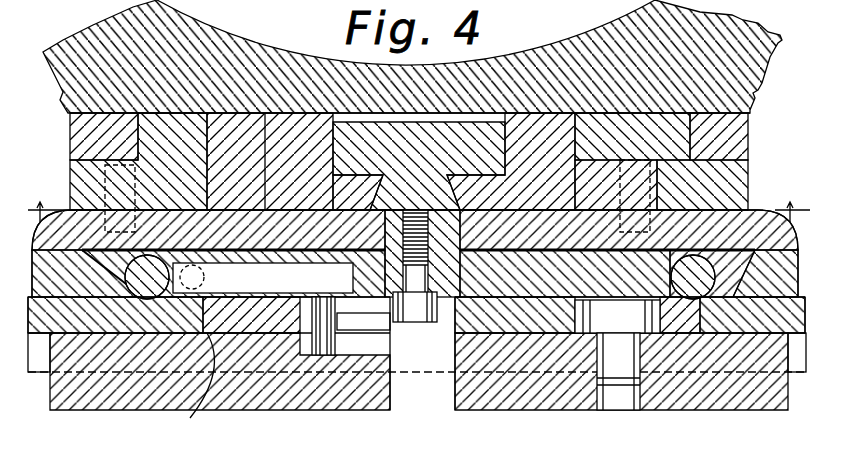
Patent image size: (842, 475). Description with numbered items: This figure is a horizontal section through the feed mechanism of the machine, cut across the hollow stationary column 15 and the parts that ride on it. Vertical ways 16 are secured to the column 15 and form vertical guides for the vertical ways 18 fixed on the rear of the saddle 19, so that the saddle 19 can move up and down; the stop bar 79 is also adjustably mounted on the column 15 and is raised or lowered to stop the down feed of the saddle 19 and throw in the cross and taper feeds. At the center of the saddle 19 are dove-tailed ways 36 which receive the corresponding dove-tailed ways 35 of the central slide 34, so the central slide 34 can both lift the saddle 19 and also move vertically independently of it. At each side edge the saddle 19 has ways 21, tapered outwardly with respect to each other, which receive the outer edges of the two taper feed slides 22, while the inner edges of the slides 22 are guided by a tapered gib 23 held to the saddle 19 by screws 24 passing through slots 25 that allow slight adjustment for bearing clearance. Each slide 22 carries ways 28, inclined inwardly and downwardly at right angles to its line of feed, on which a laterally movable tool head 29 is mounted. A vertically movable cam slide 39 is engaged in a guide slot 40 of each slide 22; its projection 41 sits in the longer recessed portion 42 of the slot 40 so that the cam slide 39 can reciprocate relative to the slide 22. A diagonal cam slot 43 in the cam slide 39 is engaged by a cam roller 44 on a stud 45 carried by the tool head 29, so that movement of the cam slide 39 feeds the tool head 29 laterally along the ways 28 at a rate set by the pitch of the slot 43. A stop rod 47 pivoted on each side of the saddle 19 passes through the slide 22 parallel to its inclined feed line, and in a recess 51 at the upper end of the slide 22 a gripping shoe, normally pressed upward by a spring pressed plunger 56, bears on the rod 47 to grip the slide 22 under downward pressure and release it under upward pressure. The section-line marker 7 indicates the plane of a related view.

The hollow stationary column 15 is at (243, 50).
The vertical ways 16 is at (87, 133).
The vertical ways 18 is at (88, 178).
The stop bar 79 is at (350, 180).
The dove-tailed ways 36 is at (357, 178).
The central slide 34 is at (386, 170).
The dove-tailed ways 35 is at (447, 170).
The saddle 19 is at (200, 247).
The ways 21 is at (415, 273).
The stop rod 47 is at (140, 298).
The spring pressed plunger 56 is at (205, 277).
The recess 51 is at (263, 278).
The taper feed slides 22 is at (416, 315).
The cam slides 39 is at (250, 320).
The tool heads 29 is at (127, 400).
The ways 28 is at (38, 372).
The guide slots 40 is at (195, 390).
The slots 25 is at (430, 300).
The screws 24 is at (407, 322).
The tapered gib 23 is at (447, 300).
The recessed portion 42 is at (543, 327).
The cam roller 44 is at (617, 323).
The projection 41 is at (557, 327).
The cam slot 43 is at (583, 310).
The stud 45 is at (617, 367).
The section line 7 is at (419, 198).